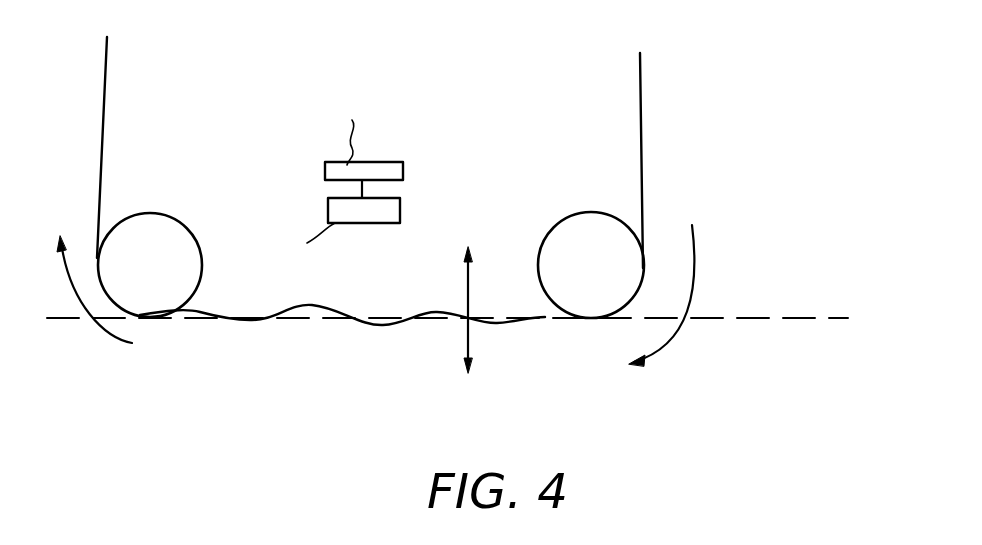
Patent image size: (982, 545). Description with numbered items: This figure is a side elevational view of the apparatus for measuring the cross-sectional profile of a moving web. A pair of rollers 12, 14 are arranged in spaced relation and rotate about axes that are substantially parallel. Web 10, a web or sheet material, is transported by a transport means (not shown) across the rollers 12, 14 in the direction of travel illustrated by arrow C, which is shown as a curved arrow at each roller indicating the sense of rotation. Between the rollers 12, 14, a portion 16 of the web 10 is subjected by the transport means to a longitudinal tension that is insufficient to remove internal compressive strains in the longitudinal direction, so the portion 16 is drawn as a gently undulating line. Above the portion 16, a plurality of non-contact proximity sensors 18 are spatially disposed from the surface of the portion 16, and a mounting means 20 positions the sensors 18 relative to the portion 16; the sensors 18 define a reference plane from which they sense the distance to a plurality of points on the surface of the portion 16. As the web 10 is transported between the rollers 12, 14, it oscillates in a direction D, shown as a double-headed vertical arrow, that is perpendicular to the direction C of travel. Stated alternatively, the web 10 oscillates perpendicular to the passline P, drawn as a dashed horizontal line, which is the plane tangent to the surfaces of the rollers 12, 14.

The web 10 is at (642, 107).
The roller 12 is at (152, 227).
The roller 14 is at (588, 303).
The portion 16 is at (266, 320).
The non-contact proximity sensors 18 is at (400, 210).
The mounting means 20 is at (403, 168).
The passline P is at (828, 318).
The direction D is at (468, 335).
The arrow C is at (95, 325).